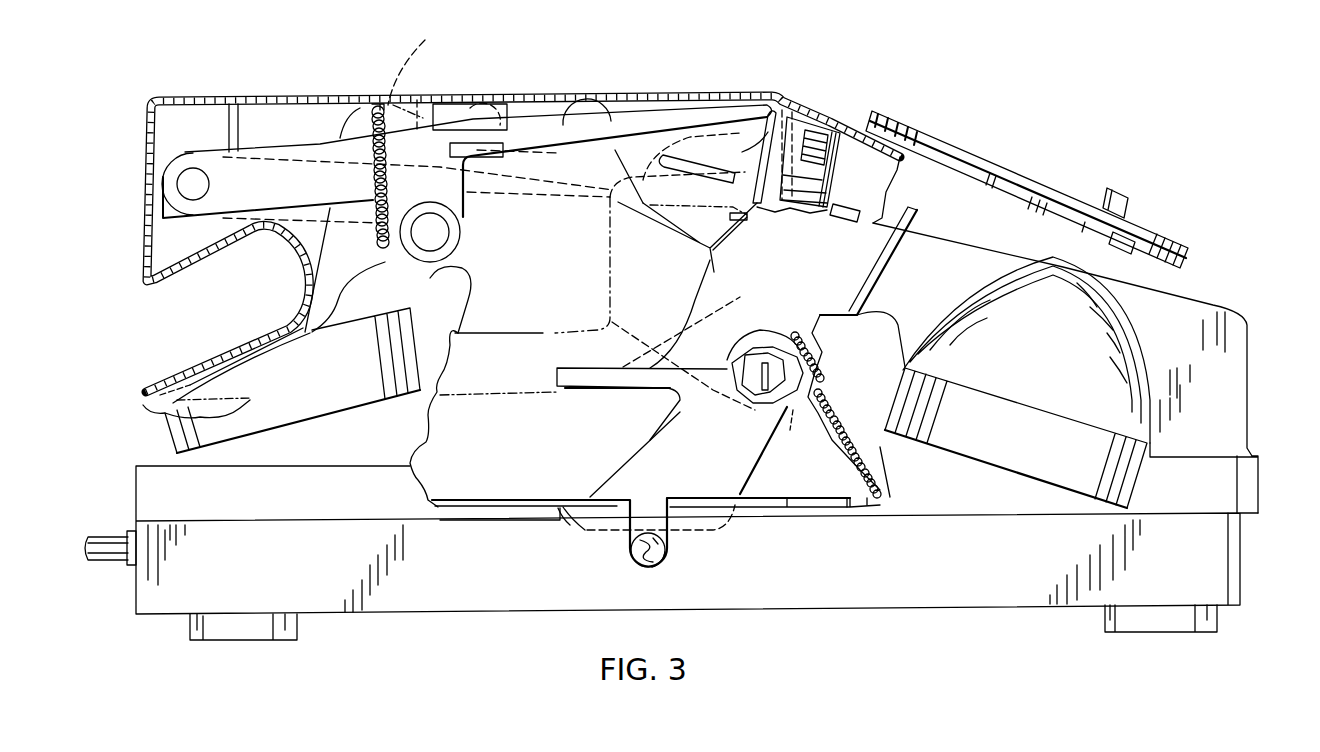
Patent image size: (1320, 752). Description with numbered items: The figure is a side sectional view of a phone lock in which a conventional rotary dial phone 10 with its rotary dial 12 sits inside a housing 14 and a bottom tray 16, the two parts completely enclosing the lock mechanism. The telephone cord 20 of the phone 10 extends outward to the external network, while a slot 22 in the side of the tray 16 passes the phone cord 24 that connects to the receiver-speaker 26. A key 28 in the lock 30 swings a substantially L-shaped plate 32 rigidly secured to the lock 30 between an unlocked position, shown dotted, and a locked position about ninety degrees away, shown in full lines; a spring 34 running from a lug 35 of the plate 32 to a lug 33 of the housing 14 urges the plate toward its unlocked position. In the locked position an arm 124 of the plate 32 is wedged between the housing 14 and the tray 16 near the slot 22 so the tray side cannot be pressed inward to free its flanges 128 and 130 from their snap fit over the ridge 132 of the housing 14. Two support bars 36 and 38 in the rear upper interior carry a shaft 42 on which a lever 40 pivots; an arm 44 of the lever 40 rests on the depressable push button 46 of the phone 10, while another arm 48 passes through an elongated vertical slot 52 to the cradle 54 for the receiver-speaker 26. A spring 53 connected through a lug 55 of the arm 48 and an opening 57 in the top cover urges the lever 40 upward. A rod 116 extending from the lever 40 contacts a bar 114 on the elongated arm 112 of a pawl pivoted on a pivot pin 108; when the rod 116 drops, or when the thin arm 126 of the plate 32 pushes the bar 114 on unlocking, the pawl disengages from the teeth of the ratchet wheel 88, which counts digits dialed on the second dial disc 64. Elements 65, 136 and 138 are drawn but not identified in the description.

The phone 10 is at (543, 334).
The rotary dial 12 is at (822, 258).
The housing 14 is at (1242, 358).
The bottom tray 16 is at (1230, 557).
The telephone cord 20 is at (112, 538).
The slot 22 is at (640, 568).
The phone cord 24 is at (631, 550).
The receiver-speaker 26 is at (315, 415).
The key 28 is at (762, 392).
The lock 30 is at (818, 378).
The L-shaped plate 32 is at (735, 358).
The lug 33 is at (857, 508).
The spring 34 is at (832, 446).
The lug 35 is at (790, 338).
The support bar 36 is at (247, 100).
The support bar 38 is at (207, 99).
The lever 40 is at (320, 145).
The shaft 42 is at (178, 176).
The arm 44 is at (418, 82).
The push button 46 is at (505, 100).
The arm 48 is at (452, 220).
The slot 52 is at (472, 282).
The spring 53 is at (374, 226).
The cradle 54 is at (840, 310).
The lug 55 is at (333, 215).
The opening 57 is at (384, 81).
The second dial disc 64 is at (1152, 235).
The tab 65 is at (1130, 203).
The ratchet wheel 88 is at (670, 177).
The pivot pin 108 is at (817, 217).
The arm 112 is at (770, 216).
The bar 114 is at (855, 95).
The rod 116 is at (663, 157).
The arm 124 is at (608, 242).
The thin arm 126 is at (607, 390).
The flange 128 is at (565, 512).
The flange 130 is at (750, 508).
The ridge 132 is at (491, 510).
The hidden guide 136 is at (740, 222).
The comb 138 is at (830, 158).